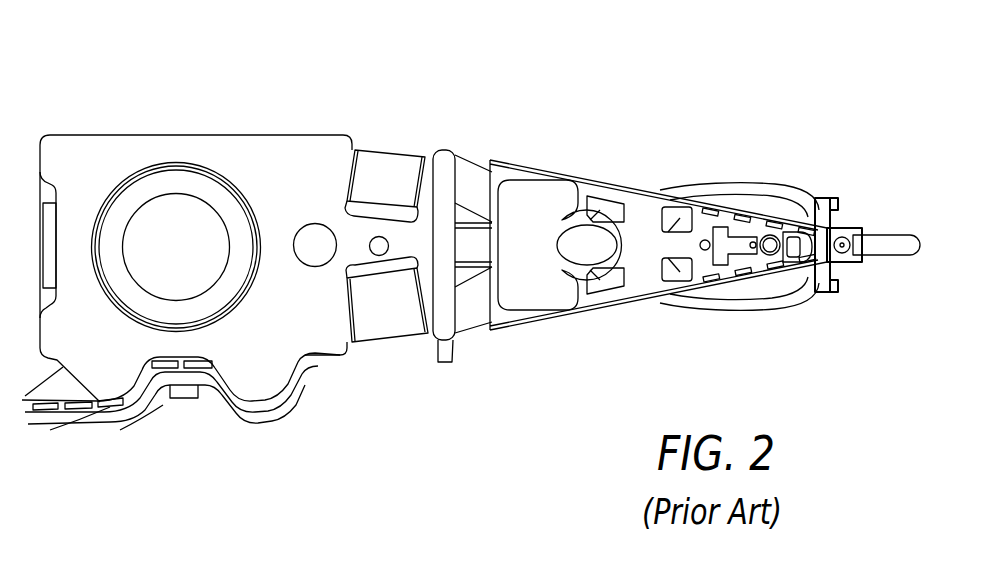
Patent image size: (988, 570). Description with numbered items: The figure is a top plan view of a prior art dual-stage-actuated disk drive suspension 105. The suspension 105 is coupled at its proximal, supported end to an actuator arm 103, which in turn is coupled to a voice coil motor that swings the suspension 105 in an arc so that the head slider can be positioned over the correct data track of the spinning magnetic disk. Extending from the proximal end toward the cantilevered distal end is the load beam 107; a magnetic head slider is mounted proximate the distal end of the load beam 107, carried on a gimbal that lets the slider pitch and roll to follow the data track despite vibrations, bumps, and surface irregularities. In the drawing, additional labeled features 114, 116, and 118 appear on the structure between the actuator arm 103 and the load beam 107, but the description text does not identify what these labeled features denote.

The actuator arm 103 is at (123, 382).
The disk drive suspension 105 is at (480, 126).
The load beam 107 is at (573, 177).
The clip 114 is at (380, 167).
The clip side flange 116 is at (353, 147).
The clip lip 118 is at (420, 218).